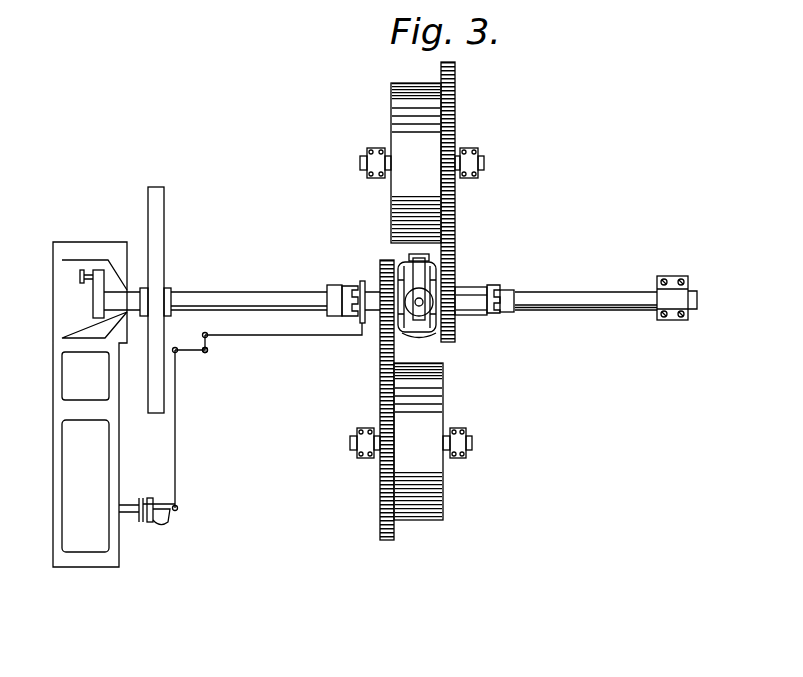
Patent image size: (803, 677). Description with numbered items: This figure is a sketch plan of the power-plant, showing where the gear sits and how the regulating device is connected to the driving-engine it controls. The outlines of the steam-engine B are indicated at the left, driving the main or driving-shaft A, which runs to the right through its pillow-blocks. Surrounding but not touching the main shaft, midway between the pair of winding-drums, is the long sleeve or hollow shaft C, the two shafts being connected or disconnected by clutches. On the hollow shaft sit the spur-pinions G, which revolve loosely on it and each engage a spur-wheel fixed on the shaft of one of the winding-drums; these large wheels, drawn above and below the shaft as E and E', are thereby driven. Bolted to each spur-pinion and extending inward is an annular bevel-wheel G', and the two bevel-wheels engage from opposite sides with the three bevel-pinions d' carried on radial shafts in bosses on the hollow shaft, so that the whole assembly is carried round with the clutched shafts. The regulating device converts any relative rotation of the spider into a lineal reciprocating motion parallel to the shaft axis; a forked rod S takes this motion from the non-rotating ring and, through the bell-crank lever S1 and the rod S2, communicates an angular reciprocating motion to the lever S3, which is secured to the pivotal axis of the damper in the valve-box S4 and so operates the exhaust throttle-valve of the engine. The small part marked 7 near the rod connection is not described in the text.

The driving-shaft A is at (400, 314).
The steam-engine B is at (90, 404).
The hollow shaft C is at (473, 292).
The upper drum gear E is at (422, 202).
The lower drum gear E' is at (423, 400).
The spur-pinion G is at (428, 267).
The annular bevel-wheel G' is at (417, 307).
The bevel-pinion d' is at (482, 327).
The brush contact 7 is at (352, 296).
The rod S is at (268, 339).
The bell-crank lever S1 is at (205, 362).
The rod S2 is at (186, 430).
The lever S3 is at (147, 503).
The valve-box S4 is at (147, 522).